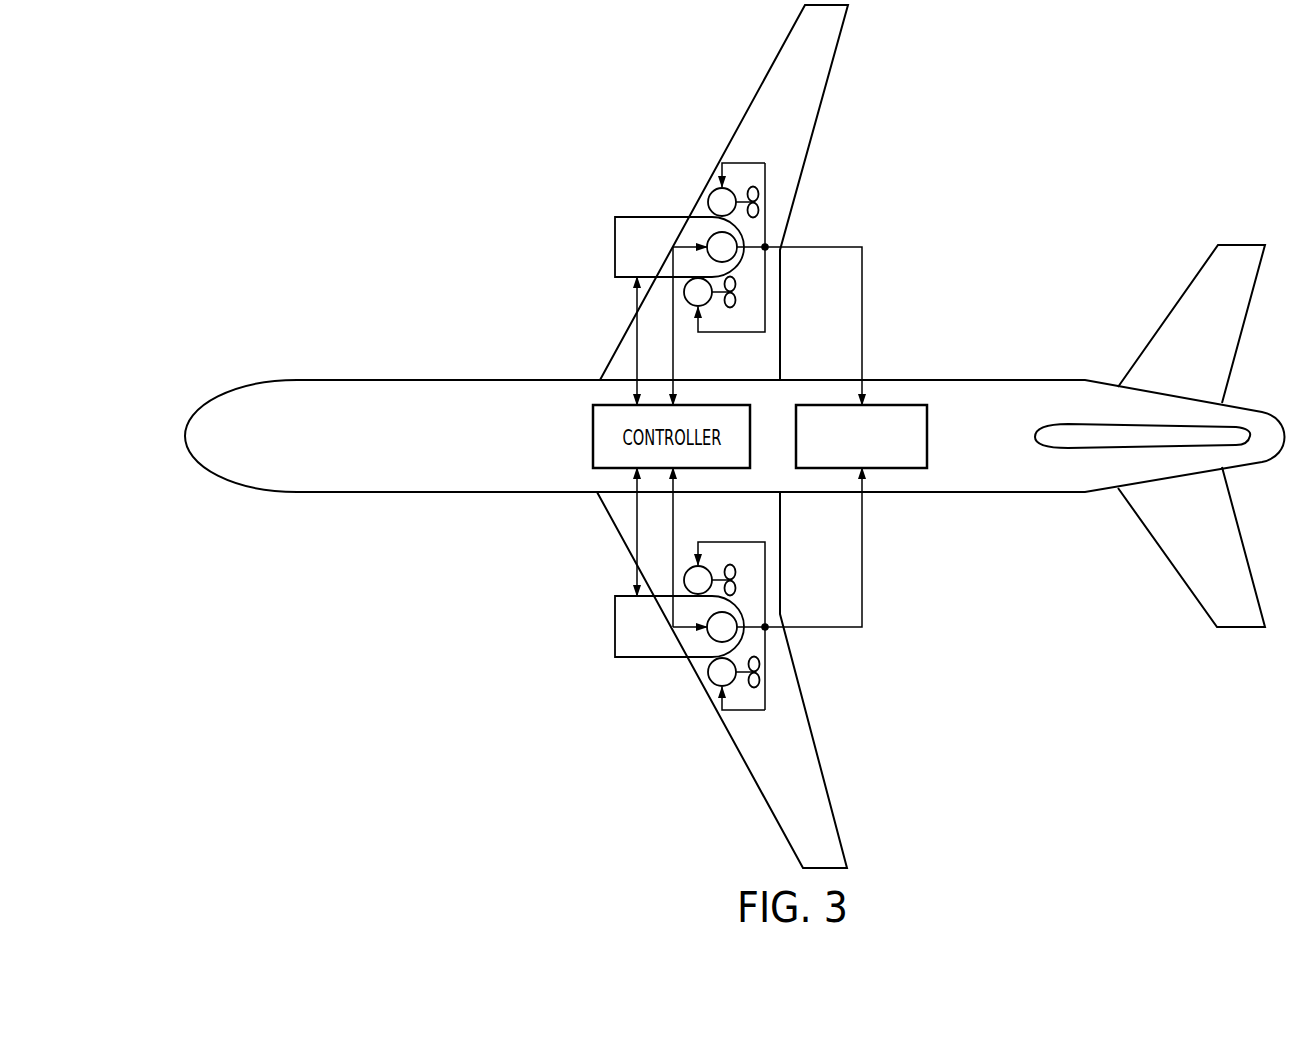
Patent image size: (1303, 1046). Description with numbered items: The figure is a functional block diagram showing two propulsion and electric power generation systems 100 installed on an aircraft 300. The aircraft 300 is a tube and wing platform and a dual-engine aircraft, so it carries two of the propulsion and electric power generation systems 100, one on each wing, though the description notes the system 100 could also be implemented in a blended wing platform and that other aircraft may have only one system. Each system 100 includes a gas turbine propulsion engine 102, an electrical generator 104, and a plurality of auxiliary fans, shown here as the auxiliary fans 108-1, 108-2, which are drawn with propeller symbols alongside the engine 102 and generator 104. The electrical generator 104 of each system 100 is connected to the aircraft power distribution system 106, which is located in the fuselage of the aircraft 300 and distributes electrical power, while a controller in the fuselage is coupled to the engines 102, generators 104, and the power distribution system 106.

The aircraft 300 is at (270, 380).
The propulsion and electric power generation system 100 is at (582, 233).
The gas turbine propulsion engine 102 is at (638, 213).
The electrical generator 104 is at (738, 242).
The aircraft power distribution system 106 is at (928, 437).
The auxiliary fan 108-1 is at (747, 187).
The auxiliary fan 108-2 is at (716, 312).